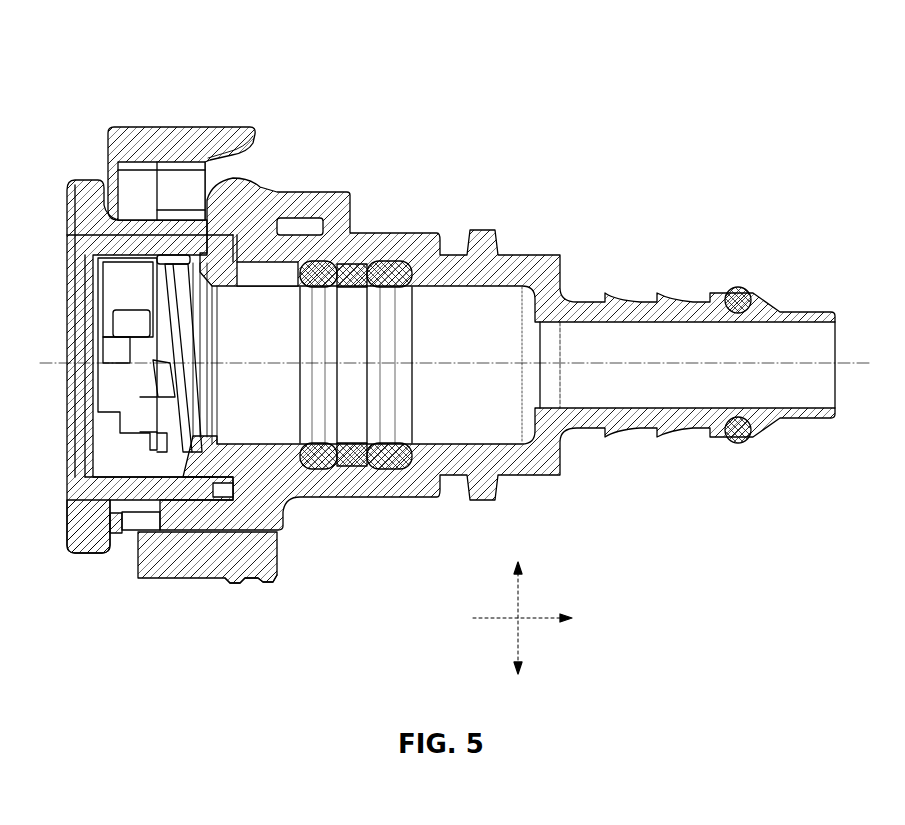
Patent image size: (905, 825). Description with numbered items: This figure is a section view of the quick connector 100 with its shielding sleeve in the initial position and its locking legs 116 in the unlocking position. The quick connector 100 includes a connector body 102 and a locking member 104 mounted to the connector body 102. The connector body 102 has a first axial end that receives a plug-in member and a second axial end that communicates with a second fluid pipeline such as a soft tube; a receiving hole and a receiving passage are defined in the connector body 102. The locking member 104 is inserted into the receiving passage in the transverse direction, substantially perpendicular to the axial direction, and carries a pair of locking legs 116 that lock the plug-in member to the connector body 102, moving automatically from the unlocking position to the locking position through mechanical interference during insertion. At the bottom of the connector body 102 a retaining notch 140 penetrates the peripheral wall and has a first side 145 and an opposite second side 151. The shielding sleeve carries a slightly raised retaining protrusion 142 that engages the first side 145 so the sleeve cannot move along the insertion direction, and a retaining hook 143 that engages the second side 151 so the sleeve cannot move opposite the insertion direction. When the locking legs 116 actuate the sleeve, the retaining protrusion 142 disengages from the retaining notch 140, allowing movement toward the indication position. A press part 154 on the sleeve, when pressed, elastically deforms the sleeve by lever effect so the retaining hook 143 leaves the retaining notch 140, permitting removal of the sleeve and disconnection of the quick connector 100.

The quick connector 100 is at (438, 46).
The connector body 102 is at (458, 282).
The locking member 104 is at (170, 150).
The locking legs 116 is at (172, 412).
The retaining notch 140 is at (140, 520).
The retaining protrusion 142 is at (155, 527).
The retaining hook 143 is at (110, 552).
The first side 145 is at (162, 531).
The second side 151 is at (95, 491).
The press part 154 is at (256, 583).